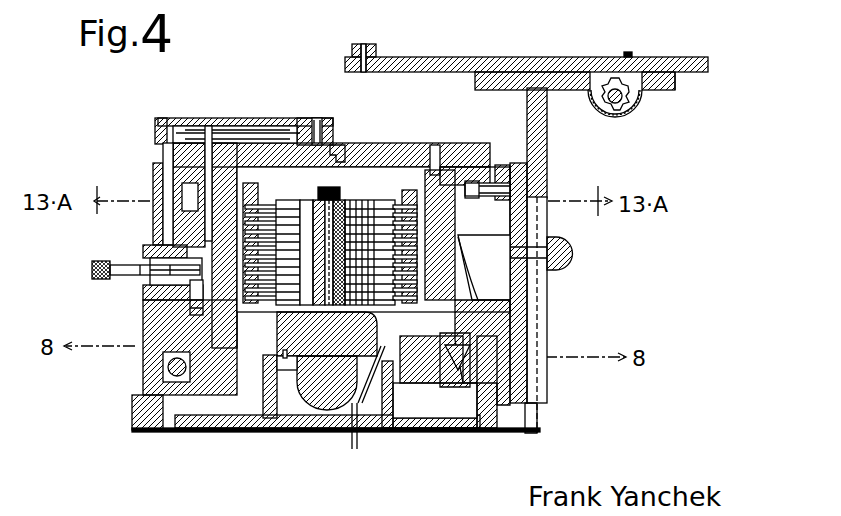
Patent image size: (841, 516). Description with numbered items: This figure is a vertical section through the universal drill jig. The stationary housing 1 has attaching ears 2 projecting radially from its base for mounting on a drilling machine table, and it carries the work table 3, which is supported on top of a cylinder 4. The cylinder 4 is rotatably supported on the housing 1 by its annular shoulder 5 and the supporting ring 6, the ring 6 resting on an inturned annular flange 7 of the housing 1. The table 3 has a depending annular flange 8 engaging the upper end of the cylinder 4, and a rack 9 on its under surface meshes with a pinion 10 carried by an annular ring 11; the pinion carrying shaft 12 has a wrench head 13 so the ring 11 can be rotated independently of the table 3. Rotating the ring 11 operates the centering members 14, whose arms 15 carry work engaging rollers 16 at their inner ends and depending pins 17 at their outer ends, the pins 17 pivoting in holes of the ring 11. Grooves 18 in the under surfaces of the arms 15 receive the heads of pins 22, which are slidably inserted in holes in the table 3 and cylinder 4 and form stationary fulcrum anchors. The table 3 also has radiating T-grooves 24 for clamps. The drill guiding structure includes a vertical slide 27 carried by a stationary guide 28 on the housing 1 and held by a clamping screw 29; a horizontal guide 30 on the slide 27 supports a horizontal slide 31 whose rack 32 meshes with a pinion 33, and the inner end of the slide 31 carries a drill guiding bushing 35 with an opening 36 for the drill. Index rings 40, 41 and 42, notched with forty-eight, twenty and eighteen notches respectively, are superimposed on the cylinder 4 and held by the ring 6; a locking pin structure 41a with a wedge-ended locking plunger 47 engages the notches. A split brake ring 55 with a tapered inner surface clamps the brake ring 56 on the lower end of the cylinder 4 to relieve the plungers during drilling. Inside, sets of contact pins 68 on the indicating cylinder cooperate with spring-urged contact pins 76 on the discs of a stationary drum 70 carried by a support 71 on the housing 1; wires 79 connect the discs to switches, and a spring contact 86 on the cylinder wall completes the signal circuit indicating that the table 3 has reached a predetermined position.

The housing 1 is at (500, 346).
The attaching ears 2 is at (205, 245).
The work table 3 is at (380, 152).
The cylinder 4 is at (484, 240).
The annular shoulder 5 is at (462, 262).
The supporting ring 6 is at (472, 352).
The inturned annular flange 7 is at (478, 396).
The depending annular flange 8 is at (154, 172).
The rack 9 is at (468, 160).
The pinion 10 is at (490, 176).
The annular ring 11 is at (162, 212).
The pinion carrying shaft 12 is at (501, 186).
The wrench head 13 is at (520, 192).
The centering members 14 is at (190, 116).
The arms 15 is at (262, 128).
The work engaging rollers 16 is at (335, 148).
The depending pins 17 is at (163, 150).
The grooves 18 is at (233, 135).
The pins 22 is at (208, 135).
The T-grooves 24 is at (342, 152).
The slide 27 is at (548, 142).
The stationary guide 28 is at (520, 322).
The clamping screw 29 is at (560, 255).
The horizontal guide 30 is at (658, 92).
The horizontal slide 31 is at (458, 60).
The rack 32 is at (684, 88).
The pinion 33 is at (628, 108).
The drill guiding bushing 35 is at (376, 54).
The opening 36 is at (362, 44).
The index ring 40 is at (150, 251).
The index ring 41 is at (192, 296).
The locking pin structure 41a is at (92, 268).
The index ring 42 is at (200, 306).
The locking plunger 47 is at (150, 291).
The split brake ring 55 is at (196, 395).
The brake ring 56 is at (233, 425).
The contact pins 68 is at (262, 208).
The stationary drum 70 is at (368, 200).
The support 71 is at (282, 412).
The contact pin 76 is at (277, 216).
The wires 79 is at (366, 408).
The spring contact 86 is at (283, 360).